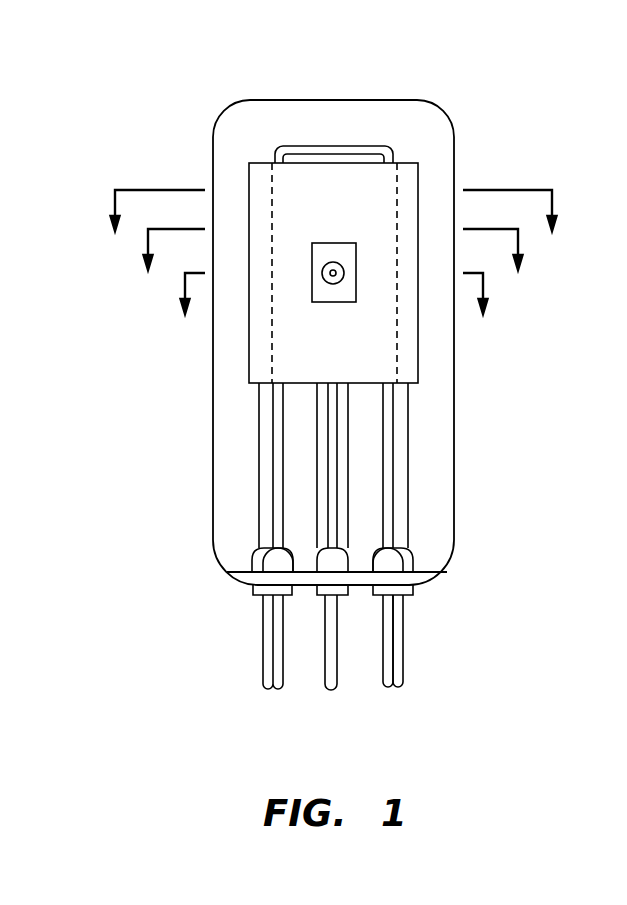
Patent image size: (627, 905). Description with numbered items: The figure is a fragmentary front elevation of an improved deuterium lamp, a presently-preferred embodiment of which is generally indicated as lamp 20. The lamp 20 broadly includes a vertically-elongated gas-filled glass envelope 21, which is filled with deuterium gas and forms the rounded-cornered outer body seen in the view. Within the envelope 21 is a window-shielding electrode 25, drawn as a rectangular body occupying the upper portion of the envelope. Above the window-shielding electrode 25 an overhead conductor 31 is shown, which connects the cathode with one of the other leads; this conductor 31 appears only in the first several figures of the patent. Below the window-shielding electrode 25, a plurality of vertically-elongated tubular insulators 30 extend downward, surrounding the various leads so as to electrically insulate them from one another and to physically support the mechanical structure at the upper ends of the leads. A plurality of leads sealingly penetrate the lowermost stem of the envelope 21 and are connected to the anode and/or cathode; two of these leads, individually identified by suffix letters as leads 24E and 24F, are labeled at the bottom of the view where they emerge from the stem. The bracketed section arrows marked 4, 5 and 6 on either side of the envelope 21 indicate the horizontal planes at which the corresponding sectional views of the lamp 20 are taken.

The deuterium lamp 20 is at (323, 399).
The glass envelope 21 is at (224, 406).
The window-shielding electrode 25 is at (382, 347).
The overhead conductor 31 is at (370, 150).
The tubular insulators 30 is at (263, 468).
The lead 24E is at (388, 688).
The lead 24F is at (398, 688).
The section line 4 is at (333, 309).
The section line 5 is at (332, 265).
The section line 6 is at (333, 226).